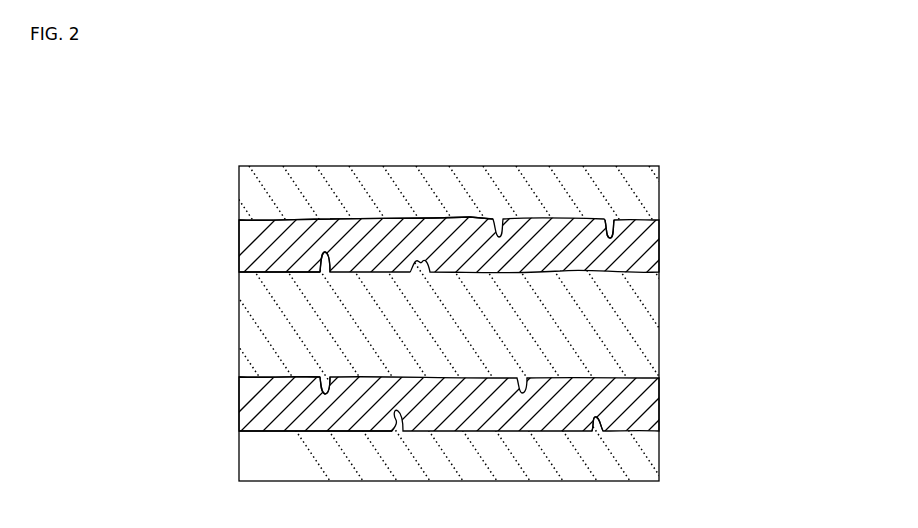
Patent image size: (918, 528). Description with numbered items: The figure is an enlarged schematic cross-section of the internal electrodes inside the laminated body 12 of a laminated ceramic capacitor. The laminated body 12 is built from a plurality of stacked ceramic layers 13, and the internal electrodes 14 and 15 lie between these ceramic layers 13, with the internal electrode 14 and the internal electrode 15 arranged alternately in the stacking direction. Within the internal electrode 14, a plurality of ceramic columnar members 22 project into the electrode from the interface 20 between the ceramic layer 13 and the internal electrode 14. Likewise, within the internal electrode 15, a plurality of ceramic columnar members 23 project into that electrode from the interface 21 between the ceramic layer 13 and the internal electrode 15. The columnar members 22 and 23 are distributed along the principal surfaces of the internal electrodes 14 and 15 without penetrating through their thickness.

The laminated body 12 is at (605, 158).
The ceramic layer 13 is at (651, 186).
The internal electrode 14 is at (648, 250).
The internal electrode 15 is at (642, 398).
The interface 20 is at (268, 220).
The interface 21 is at (283, 377).
The ceramic columnar member 22 is at (611, 233).
The ceramic columnar member 23 is at (325, 393).